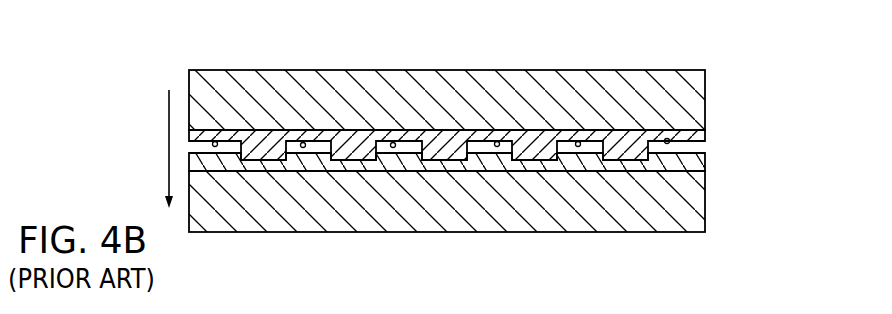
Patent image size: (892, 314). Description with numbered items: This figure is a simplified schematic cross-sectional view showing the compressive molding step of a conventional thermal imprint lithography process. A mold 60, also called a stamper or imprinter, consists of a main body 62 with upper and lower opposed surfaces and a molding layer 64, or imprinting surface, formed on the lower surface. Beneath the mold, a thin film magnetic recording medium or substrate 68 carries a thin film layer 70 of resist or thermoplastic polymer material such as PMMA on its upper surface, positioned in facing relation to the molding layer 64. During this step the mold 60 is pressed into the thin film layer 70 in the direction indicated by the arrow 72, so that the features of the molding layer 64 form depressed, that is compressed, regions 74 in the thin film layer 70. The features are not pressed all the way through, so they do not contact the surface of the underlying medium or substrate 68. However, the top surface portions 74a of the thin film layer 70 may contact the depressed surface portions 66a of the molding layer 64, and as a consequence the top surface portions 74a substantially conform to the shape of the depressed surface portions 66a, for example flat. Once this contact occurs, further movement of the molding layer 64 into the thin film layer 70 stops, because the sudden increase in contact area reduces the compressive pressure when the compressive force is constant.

The mold 60 is at (490, 128).
The main body 62 is at (490, 100).
The molding layer 64 is at (490, 137).
The depressed surface portions 66a is at (215, 141).
The thin film magnetic recording medium 68 is at (490, 201).
The thin film layer 70 is at (490, 166).
The arrow 72 is at (139, 147).
The depressed regions 74 is at (415, 230).
The top surface portions 74a is at (435, 229).